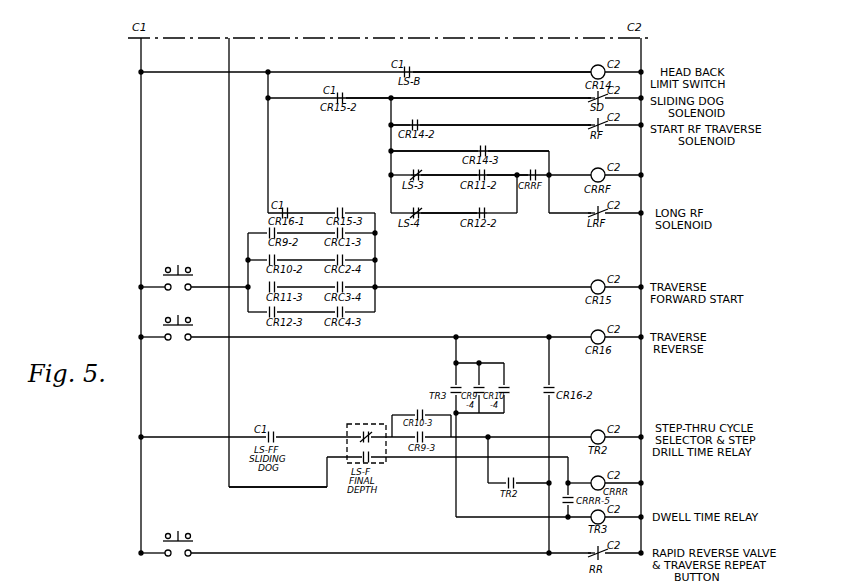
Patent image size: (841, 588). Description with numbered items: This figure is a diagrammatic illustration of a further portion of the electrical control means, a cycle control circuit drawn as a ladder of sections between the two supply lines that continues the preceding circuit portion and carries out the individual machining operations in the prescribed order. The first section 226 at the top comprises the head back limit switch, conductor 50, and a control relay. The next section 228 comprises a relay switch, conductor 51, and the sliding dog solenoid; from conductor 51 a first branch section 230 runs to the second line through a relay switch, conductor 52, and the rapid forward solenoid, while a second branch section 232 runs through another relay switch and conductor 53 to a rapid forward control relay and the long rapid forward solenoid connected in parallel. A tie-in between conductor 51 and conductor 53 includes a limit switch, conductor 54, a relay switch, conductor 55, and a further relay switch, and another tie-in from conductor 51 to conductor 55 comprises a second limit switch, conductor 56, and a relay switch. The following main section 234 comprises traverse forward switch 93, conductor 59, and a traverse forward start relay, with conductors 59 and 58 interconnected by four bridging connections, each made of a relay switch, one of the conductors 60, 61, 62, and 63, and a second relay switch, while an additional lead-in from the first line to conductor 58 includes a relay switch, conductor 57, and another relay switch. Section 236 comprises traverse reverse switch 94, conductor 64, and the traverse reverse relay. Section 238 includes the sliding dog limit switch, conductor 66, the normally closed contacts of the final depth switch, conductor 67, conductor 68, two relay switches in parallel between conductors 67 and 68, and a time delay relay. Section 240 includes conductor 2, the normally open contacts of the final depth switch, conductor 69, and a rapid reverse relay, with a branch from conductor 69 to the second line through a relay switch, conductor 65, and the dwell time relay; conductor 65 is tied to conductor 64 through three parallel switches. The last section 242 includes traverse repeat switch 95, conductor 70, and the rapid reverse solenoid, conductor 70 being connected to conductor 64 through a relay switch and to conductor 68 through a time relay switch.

The conductor 2 is at (293, 253).
The conductor 50 is at (502, 65).
The conductor 51 is at (468, 148).
The conductor 52 is at (505, 118).
The conductor 53 is at (541, 175).
The conductor 54 is at (449, 168).
The conductor 55 is at (507, 187).
The conductor 56 is at (449, 206).
The conductor 57 is at (301, 206).
The conductor 58 is at (468, 255).
The conductor 59 is at (229, 266).
The conductor 60 is at (306, 226).
The conductor 61 is at (306, 253).
The conductor 62 is at (306, 280).
The conductor 63 is at (306, 305).
The conductor 64 is at (391, 354).
The conductor 65 is at (522, 454).
The conductor 66 is at (319, 430).
The conductor 67 is at (393, 420).
The conductor 68 is at (508, 443).
The conductor 69 is at (480, 484).
The conductor 70 is at (393, 472).
The traverse forward switch 93 is at (191, 280).
The traverse reverse switch 94 is at (176, 344).
The traverse repeat switch 95 is at (173, 560).
The first section 226 is at (365, 72).
The section 228 is at (365, 142).
The first branch section 230 is at (365, 125).
The second branch section 232 is at (318, 151).
The circuit line 234 is at (365, 287).
The section 236 is at (365, 337).
The section 238 is at (365, 437).
The section 240 is at (207, 487).
The last section 242 is at (365, 553).